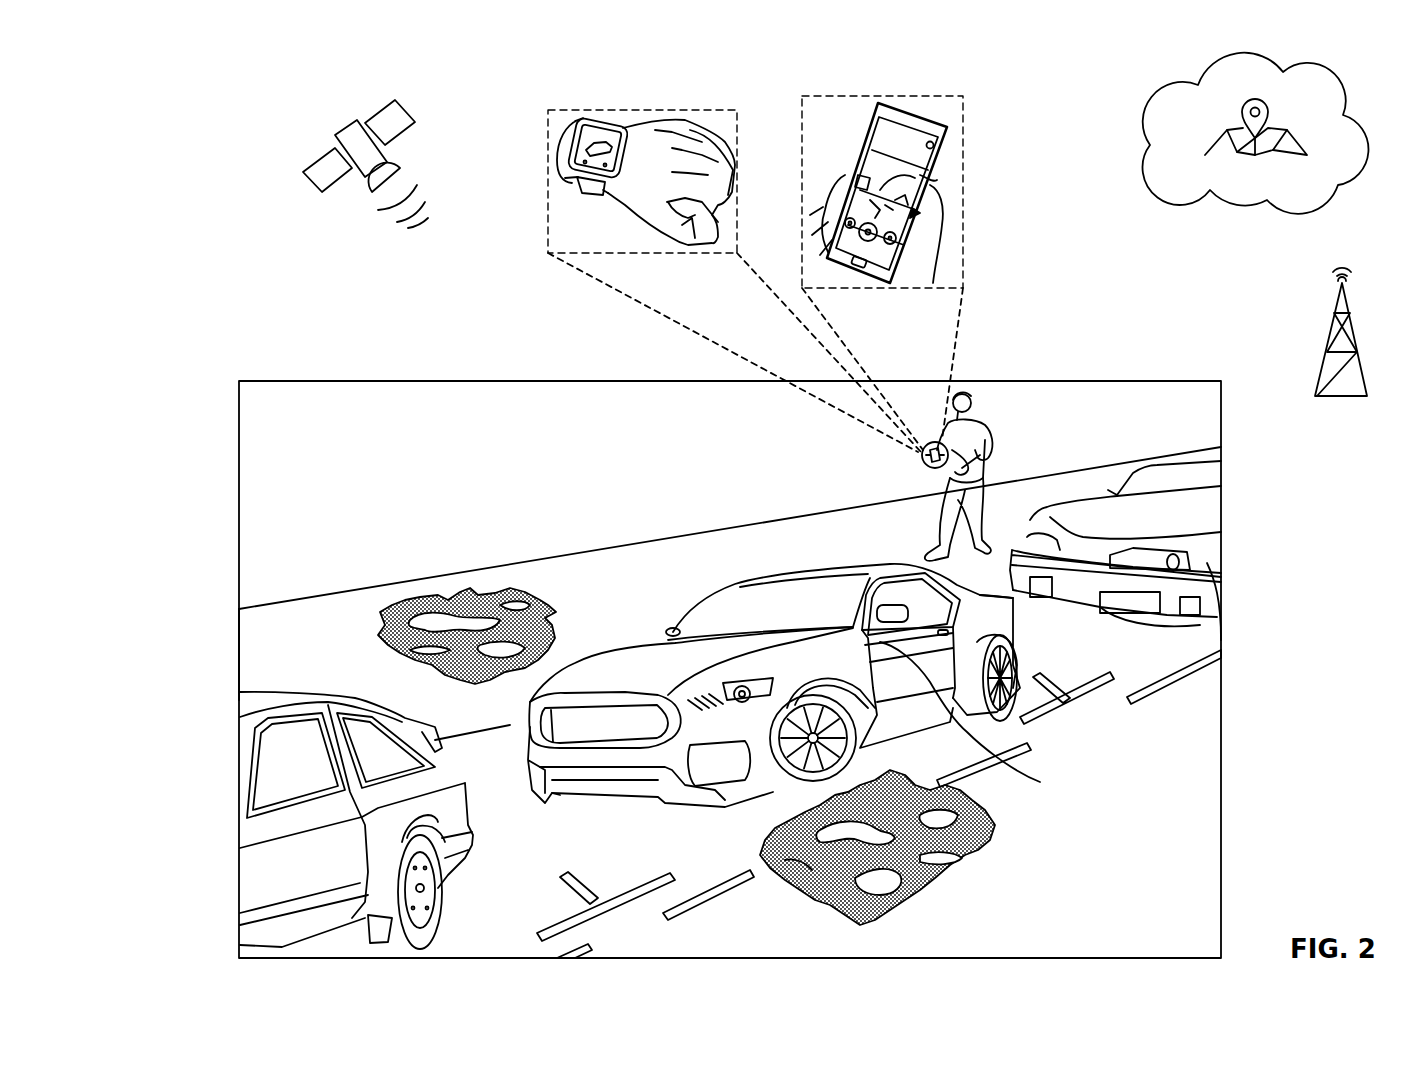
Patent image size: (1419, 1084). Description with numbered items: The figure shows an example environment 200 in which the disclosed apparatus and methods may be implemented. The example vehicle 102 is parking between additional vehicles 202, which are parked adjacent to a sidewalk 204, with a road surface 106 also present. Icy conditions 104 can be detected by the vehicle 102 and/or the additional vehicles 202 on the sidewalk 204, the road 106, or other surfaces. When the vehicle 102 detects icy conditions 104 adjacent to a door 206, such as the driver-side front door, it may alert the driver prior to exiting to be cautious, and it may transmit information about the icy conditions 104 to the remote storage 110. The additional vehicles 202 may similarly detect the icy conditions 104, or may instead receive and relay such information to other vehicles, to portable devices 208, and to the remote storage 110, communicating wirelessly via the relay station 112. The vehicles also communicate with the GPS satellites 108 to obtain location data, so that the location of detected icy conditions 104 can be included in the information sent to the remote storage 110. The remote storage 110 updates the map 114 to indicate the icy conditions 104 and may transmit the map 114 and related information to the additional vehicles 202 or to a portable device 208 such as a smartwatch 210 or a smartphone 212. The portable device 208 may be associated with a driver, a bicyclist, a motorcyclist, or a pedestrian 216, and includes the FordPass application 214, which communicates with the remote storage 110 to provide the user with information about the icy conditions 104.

The example environment 200 is at (253, 74).
The vehicle 102 is at (1030, 694).
The icy conditions 104 is at (462, 592).
The road surface 106 is at (1200, 848).
The GPS satellites 108 is at (348, 208).
The remote storage 110 is at (1115, 145).
The relay station 112 is at (1318, 378).
The map 114 is at (1240, 162).
The additional vehicles 202 is at (262, 650).
The sidewalk 204 is at (628, 565).
The door 206 is at (1040, 782).
The portable devices 208 is at (750, 74).
The smartwatch 210 is at (590, 128).
The smartphone 212 is at (932, 128).
The FordPass application 214 is at (915, 213).
The pedestrian 216 is at (990, 428).